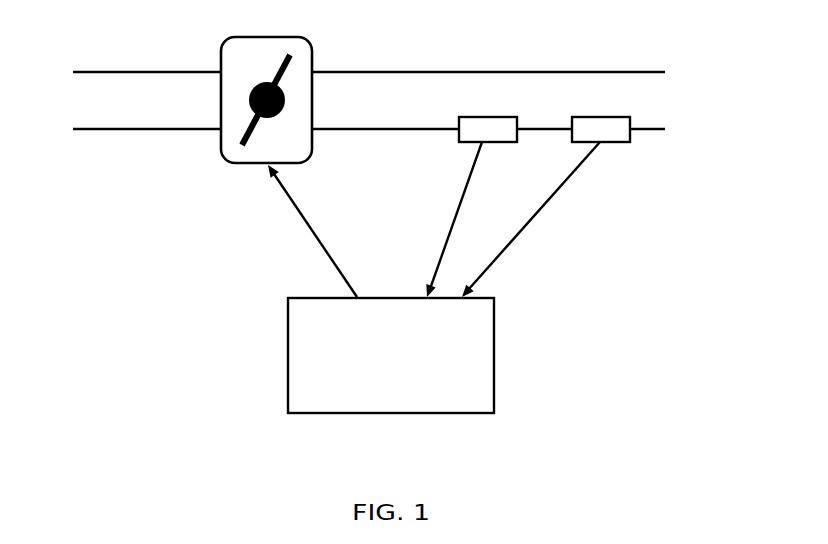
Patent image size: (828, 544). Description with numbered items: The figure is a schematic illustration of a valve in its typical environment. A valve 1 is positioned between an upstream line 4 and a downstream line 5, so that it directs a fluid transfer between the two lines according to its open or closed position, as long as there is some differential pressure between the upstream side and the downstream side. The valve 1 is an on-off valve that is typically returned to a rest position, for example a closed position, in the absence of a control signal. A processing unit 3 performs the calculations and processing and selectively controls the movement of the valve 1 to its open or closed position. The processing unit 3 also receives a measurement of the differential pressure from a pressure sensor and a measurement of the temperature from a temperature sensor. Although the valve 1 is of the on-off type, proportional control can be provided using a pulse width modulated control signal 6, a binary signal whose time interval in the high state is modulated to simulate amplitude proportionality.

The valve 1 is at (229, 132).
The processing unit 3 is at (440, 353).
The upstream line 4 is at (143, 64).
The downstream line 5 is at (491, 64).
The pulse width modulated control signal 6 is at (284, 231).